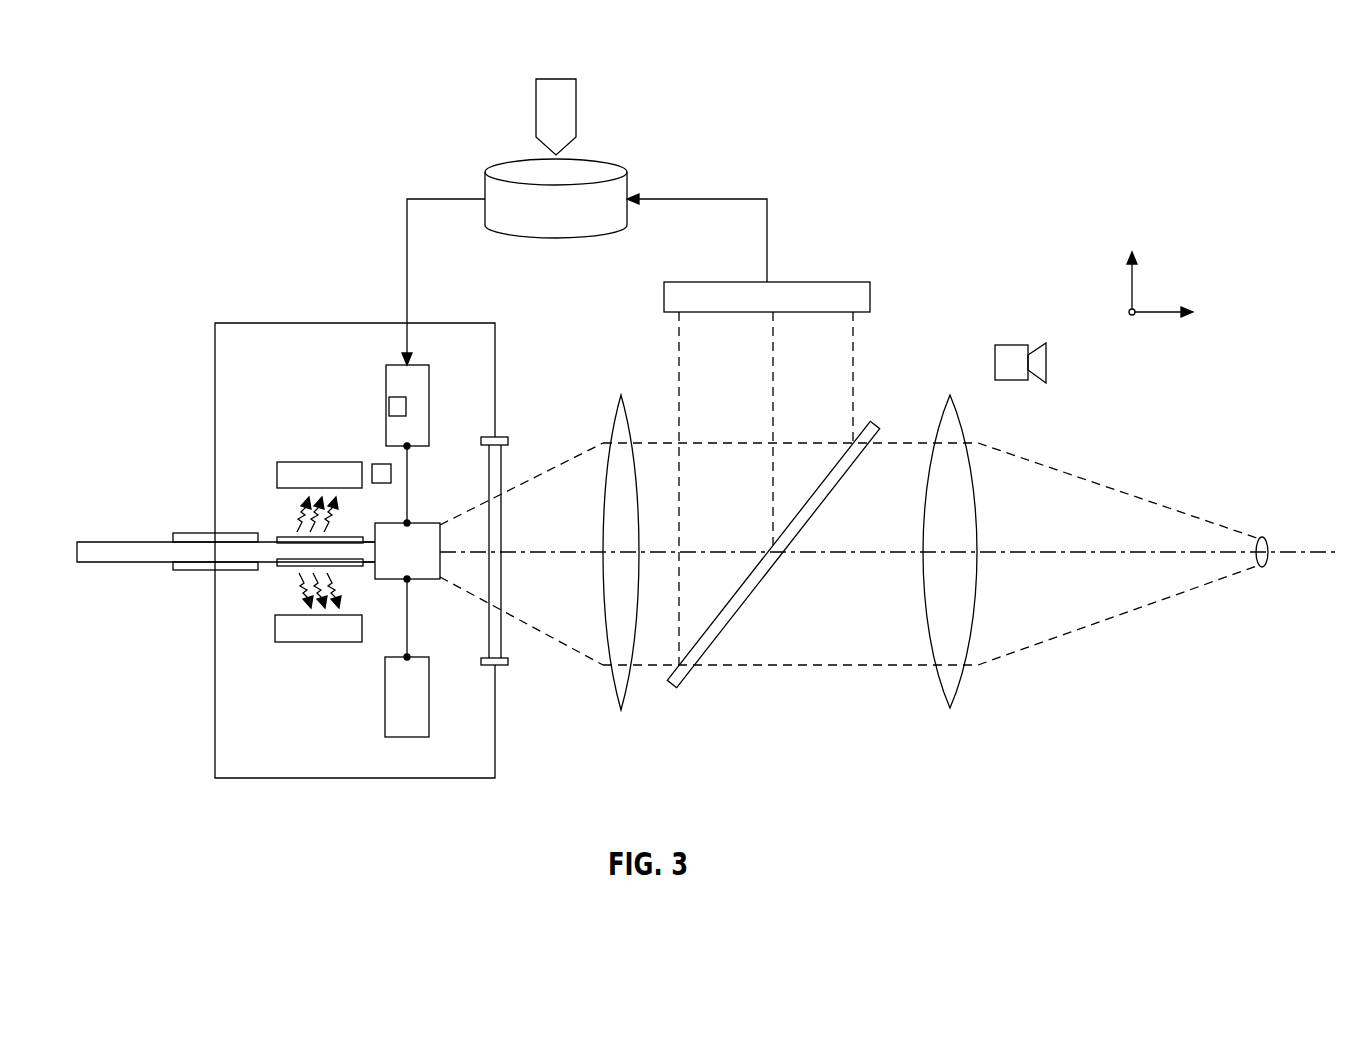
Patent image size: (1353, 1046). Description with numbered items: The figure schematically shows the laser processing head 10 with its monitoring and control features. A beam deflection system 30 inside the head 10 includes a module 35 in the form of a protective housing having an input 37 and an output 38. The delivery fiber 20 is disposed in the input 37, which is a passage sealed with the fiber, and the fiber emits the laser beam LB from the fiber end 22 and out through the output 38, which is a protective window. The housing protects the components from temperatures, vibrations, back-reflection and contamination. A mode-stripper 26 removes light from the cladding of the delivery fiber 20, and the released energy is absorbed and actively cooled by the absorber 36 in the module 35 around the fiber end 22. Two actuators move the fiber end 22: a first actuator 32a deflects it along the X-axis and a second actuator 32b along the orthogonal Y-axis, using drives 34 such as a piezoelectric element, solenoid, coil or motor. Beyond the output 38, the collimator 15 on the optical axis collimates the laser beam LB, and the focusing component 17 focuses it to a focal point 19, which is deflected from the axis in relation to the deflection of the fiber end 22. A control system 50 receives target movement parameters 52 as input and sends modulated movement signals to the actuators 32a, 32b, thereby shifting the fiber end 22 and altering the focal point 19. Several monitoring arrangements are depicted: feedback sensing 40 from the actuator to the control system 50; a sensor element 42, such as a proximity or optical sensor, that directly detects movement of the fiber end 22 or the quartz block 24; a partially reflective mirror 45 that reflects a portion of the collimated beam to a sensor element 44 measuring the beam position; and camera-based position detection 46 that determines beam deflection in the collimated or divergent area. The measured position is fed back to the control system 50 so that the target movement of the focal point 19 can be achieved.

The laser processing head 10 is at (702, 413).
The beam deflection system 30 is at (324, 499).
The module 35 is at (270, 322).
The delivery fiber 20 is at (130, 563).
The input 37 is at (200, 533).
The mode-stripper 26 is at (287, 566).
The fiber end 22 is at (362, 586).
The absorber 36 is at (320, 462).
The sensor element 42 is at (383, 464).
The first actuator 32a is at (445, 398).
The second actuator 32b is at (446, 698).
The drive 34 is at (402, 364).
The feedback sensing 40 is at (389, 405).
The quartz block 24 is at (420, 580).
The output 38 is at (502, 452).
The collimator 15 is at (621, 710).
The partially reflective mirror 45 is at (739, 610).
The focusing component 17 is at (950, 708).
The focal point 19 is at (1268, 560).
The laser beam LB is at (1100, 485).
The sensor element 44 is at (820, 282).
The control system 50 is at (610, 160).
The target movement parameters 52 is at (556, 78).
The camera-based position detection 46 is at (1010, 345).